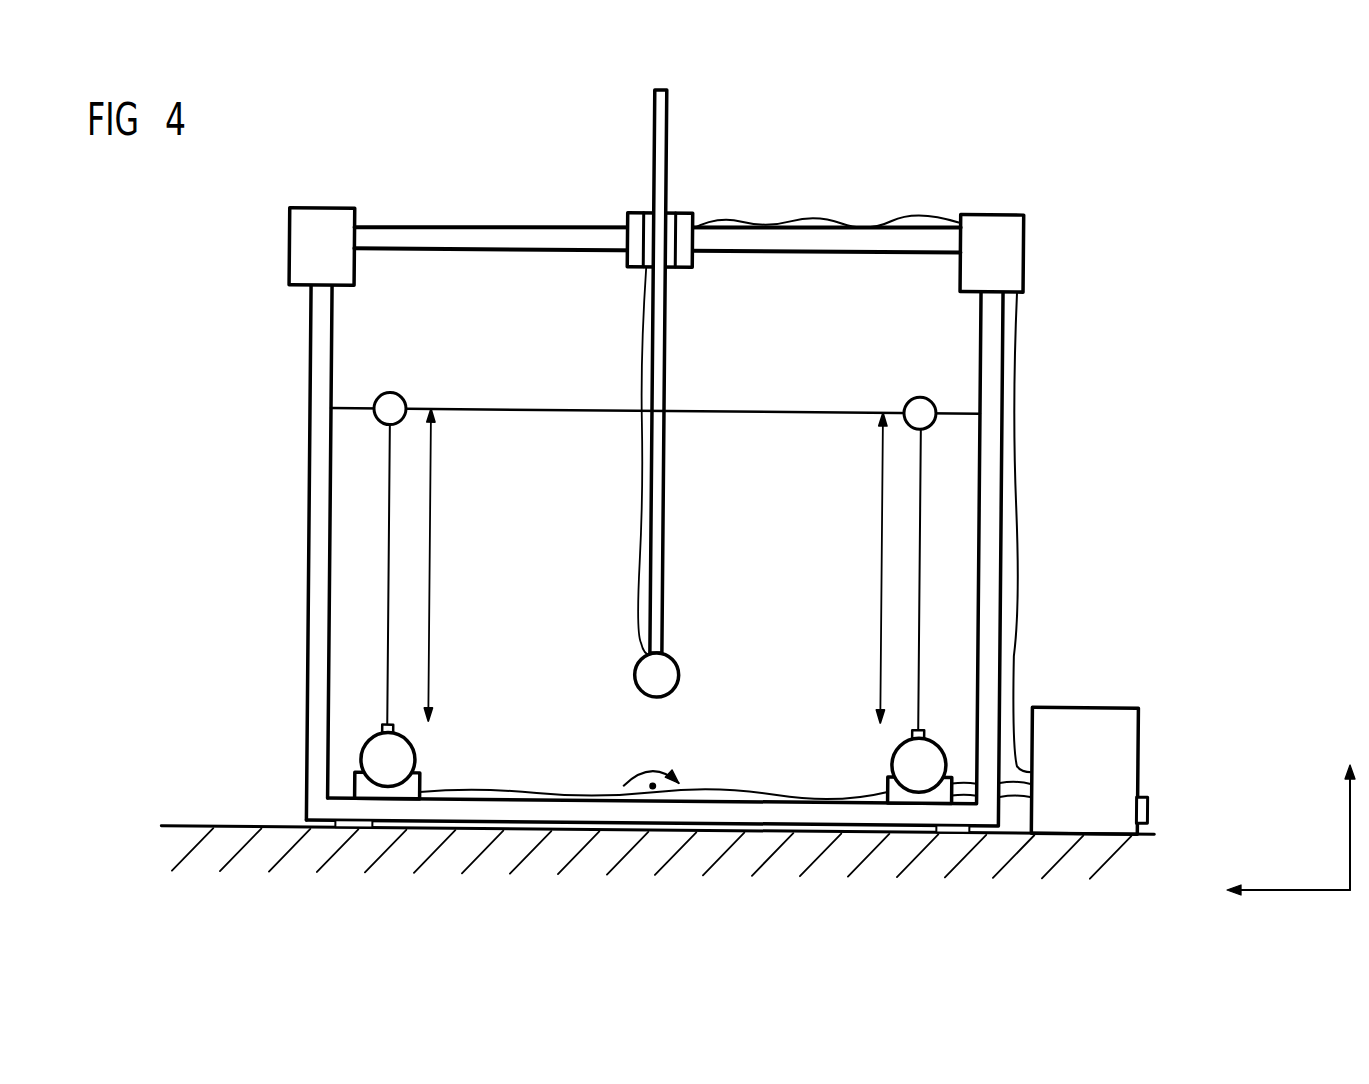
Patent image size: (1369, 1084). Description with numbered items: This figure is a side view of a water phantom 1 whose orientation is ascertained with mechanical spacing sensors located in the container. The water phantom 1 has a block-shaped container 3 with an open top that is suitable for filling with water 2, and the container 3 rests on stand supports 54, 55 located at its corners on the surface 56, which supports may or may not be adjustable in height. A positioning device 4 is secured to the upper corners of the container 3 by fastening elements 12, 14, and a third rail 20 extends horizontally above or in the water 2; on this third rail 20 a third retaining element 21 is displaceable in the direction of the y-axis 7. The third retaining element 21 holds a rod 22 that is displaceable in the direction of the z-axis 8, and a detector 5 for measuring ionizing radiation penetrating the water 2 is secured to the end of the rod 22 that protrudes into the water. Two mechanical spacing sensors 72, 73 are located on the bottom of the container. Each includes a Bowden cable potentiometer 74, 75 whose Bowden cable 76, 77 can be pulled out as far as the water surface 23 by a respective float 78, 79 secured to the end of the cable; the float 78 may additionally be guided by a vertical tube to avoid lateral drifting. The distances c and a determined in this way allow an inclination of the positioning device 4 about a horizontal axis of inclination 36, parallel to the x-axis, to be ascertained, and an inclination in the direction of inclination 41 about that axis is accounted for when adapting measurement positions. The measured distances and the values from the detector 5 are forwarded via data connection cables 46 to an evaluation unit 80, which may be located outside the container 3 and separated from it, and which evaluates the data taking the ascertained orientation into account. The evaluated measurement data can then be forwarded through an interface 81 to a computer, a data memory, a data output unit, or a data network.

The water phantom 1 is at (183, 302).
The water 2 is at (355, 481).
The container 3 is at (320, 596).
The positioning device 4 is at (818, 203).
The detector 5 is at (645, 677).
The y-axis 7 is at (1265, 890).
The z-axis 8 is at (1350, 800).
The fastening element 12 is at (297, 233).
The fastening element 14 is at (1013, 231).
The third rail 20 is at (482, 236).
The third retaining element 21 is at (657, 230).
The rod 22 is at (657, 126).
The water surface 23 is at (514, 403).
The axis of inclination 36 is at (652, 770).
The direction of inclination 41 is at (663, 766).
The data connection cable 46 is at (1020, 481).
The stand support 54 is at (345, 827).
The stand support 55 is at (950, 834).
The surface 56 is at (187, 827).
The mechanical spacing sensor 72 is at (430, 740).
The mechanical spacing sensor 73 is at (878, 737).
The Bowden cable potentiometer 74 is at (405, 757).
The Bowden cable potentiometer 75 is at (900, 755).
The Bowden cable 76 is at (392, 638).
The Bowden cable 77 is at (918, 637).
The float 78 is at (388, 397).
The float 79 is at (921, 400).
The evaluation unit 80 is at (1085, 711).
The interface 81 is at (1150, 803).